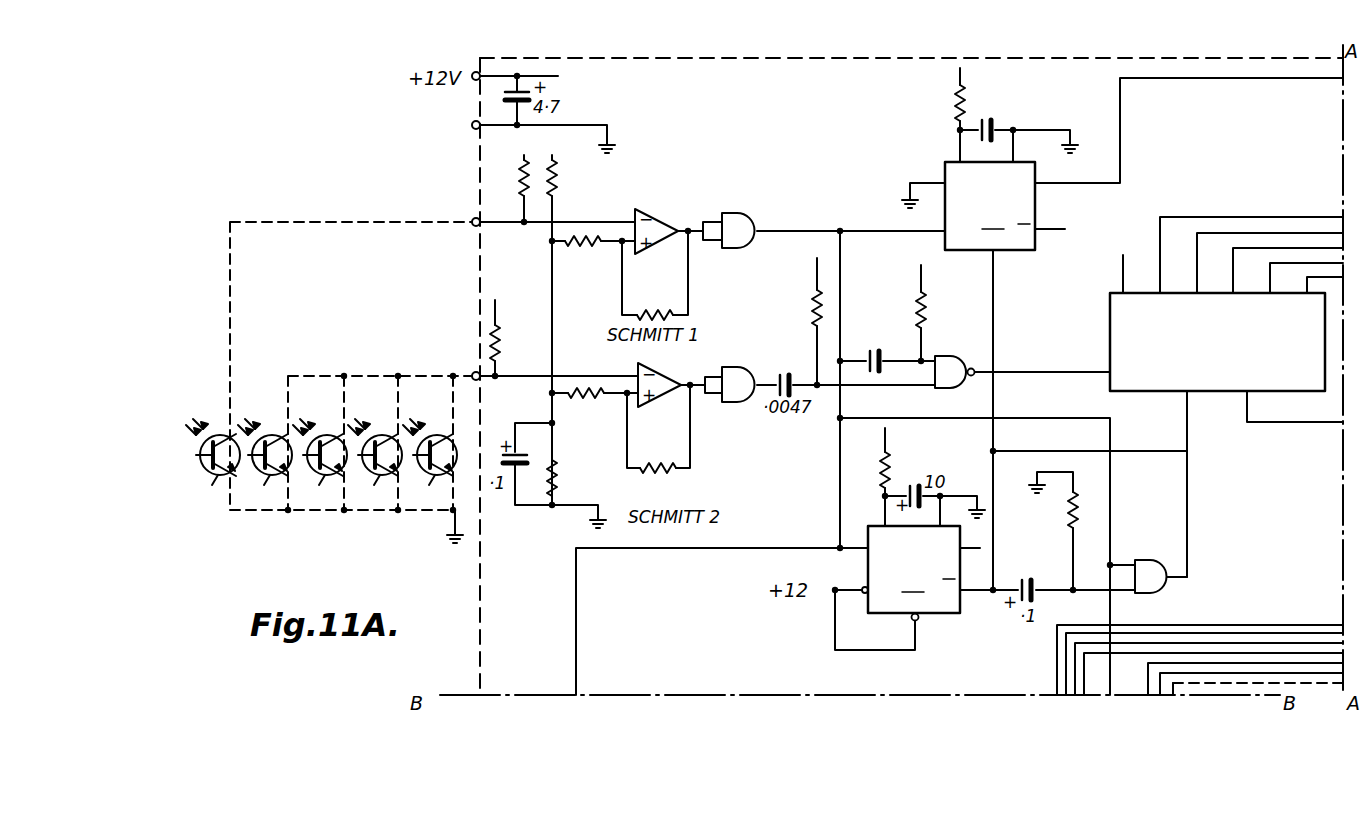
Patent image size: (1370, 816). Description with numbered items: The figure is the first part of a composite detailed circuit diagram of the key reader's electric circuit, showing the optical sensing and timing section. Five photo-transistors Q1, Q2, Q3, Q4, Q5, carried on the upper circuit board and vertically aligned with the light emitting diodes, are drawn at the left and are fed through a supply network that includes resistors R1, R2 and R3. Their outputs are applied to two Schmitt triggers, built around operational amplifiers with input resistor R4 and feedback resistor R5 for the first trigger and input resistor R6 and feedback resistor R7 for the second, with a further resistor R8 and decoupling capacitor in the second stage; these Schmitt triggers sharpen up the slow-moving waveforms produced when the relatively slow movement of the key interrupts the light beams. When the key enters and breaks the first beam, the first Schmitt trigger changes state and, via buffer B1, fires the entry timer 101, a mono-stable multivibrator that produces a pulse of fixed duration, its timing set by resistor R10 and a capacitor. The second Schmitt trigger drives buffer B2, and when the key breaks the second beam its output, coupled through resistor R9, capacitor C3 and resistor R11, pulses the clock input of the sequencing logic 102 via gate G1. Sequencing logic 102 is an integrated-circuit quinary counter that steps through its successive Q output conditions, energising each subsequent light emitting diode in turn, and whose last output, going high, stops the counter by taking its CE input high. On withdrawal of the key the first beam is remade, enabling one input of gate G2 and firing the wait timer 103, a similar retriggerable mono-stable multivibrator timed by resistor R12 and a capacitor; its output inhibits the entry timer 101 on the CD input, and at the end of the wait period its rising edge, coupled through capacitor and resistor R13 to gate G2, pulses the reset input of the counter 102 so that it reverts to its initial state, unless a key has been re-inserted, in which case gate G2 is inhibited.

The entry timer 101 is at (1020, 251).
The sequencing logic 102 is at (1159, 383).
The wait timer 103 is at (940, 612).
The photo-transistor Q1 is at (213, 461).
The photo-transistor Q2 is at (265, 461).
The photo-transistor Q3 is at (320, 461).
The photo-transistor Q4 is at (375, 461).
The photo-transistor Q5 is at (430, 461).
The resistor 47K R1 is at (504, 179).
The resistor 8K2 R2 is at (570, 179).
The resistor 47K R3 is at (514, 328).
The resistor 100K R4 is at (593, 262).
The feedback resistor 150K R5 is at (655, 275).
The resistor 100K R6 is at (595, 415).
The feedback resistor 150K R7 is at (658, 441).
The resistor 3K9 R8 is at (571, 481).
The resistor 100K R9 is at (789, 321).
The resistor R10 is at (935, 115).
The resistor R11 is at (941, 313).
The resistor 220K R12 is at (909, 475).
The resistor 100K R13 is at (1043, 531).
The capacitor C3 is at (887, 338).
The buffer B1 is at (750, 222).
The buffer gate B2 is at (730, 400).
The gate G1 is at (946, 389).
The gate G2 is at (1150, 586).